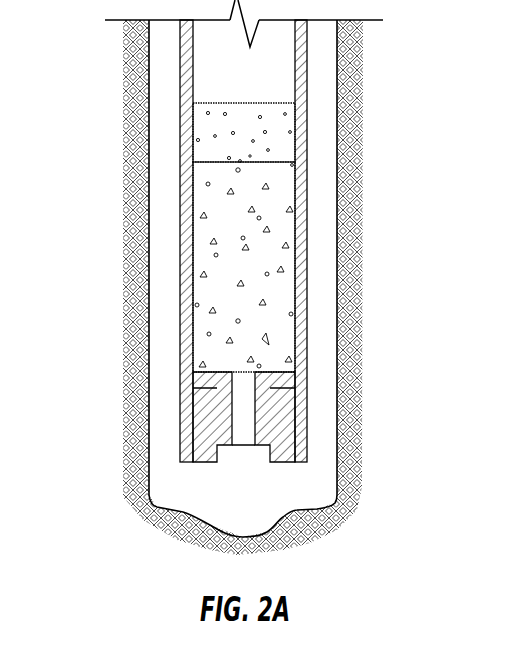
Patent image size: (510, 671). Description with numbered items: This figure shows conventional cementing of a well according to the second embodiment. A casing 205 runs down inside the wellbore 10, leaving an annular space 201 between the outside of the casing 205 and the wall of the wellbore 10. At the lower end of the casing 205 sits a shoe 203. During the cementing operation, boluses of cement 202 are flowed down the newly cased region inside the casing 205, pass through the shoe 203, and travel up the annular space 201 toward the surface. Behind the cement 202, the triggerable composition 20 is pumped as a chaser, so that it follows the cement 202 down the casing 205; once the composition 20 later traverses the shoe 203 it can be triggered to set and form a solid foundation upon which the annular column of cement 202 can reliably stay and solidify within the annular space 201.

The wellbore 10 is at (123, 140).
The composition 20 is at (285, 137).
The annular space 201 is at (323, 323).
The cement 202 is at (283, 227).
The shoe 203 is at (270, 408).
The casing 205 is at (182, 282).